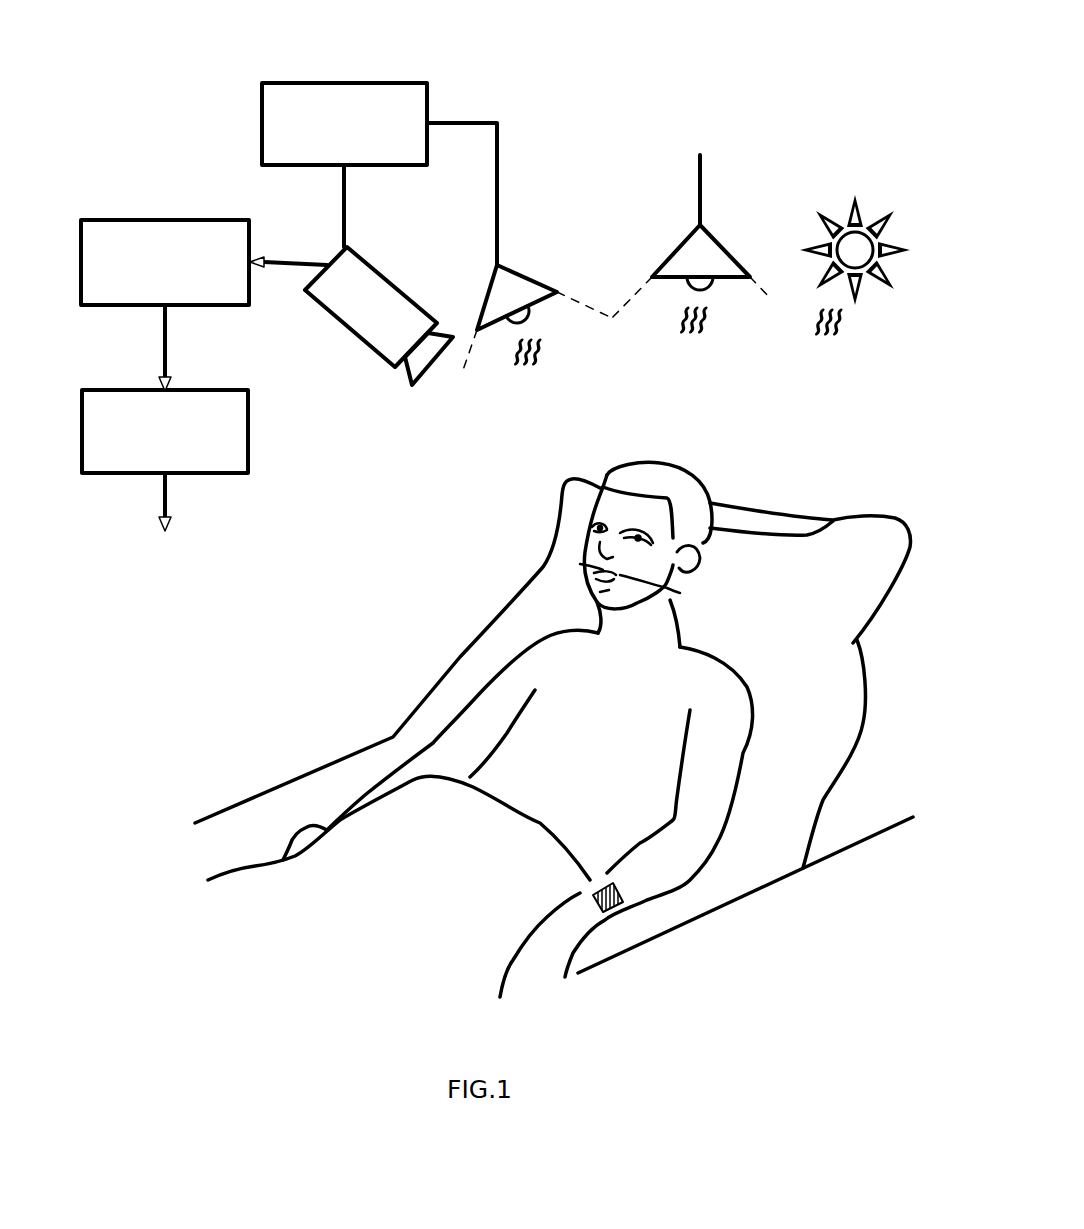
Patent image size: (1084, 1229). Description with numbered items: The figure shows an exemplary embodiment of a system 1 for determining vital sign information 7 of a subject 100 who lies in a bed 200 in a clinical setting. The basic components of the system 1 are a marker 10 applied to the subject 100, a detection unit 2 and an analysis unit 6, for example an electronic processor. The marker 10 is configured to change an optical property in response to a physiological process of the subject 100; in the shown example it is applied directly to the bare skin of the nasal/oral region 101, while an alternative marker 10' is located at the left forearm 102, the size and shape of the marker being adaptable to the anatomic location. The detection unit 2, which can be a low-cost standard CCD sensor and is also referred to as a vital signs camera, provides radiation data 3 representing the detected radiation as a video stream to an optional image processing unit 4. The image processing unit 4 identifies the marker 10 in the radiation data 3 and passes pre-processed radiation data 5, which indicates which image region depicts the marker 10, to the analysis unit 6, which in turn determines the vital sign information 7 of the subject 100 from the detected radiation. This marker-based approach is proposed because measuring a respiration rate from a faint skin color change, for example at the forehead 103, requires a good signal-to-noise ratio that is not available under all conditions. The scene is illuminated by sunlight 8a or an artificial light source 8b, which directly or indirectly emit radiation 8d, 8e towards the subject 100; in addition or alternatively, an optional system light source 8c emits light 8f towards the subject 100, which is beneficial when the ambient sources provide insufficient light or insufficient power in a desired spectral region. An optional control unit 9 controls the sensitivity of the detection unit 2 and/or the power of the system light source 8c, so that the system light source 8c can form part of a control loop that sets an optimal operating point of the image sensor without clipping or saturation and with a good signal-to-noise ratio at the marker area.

The system 1 is at (724, 76).
The detection unit 2 is at (340, 323).
The radiation data 3 is at (283, 268).
The image processing unit 4 is at (249, 232).
The pre-processed radiation data 5 is at (165, 340).
The analysis unit 6 is at (248, 428).
The vital sign information 7 is at (165, 503).
The sunlight 8a is at (870, 226).
The artificial light source 8b is at (700, 183).
The system light source 8c is at (497, 183).
The radiation 8d is at (848, 328).
The radiation 8e is at (712, 322).
The light 8f is at (545, 352).
The control unit 9 is at (427, 100).
The marker 10 is at (579, 566).
The alternative marker 10' is at (627, 940).
The subject 100 is at (623, 458).
The nasal/oral region 101 is at (680, 593).
The left forearm 102 is at (673, 885).
The forehead 103 is at (647, 507).
The bed 200 is at (425, 707).